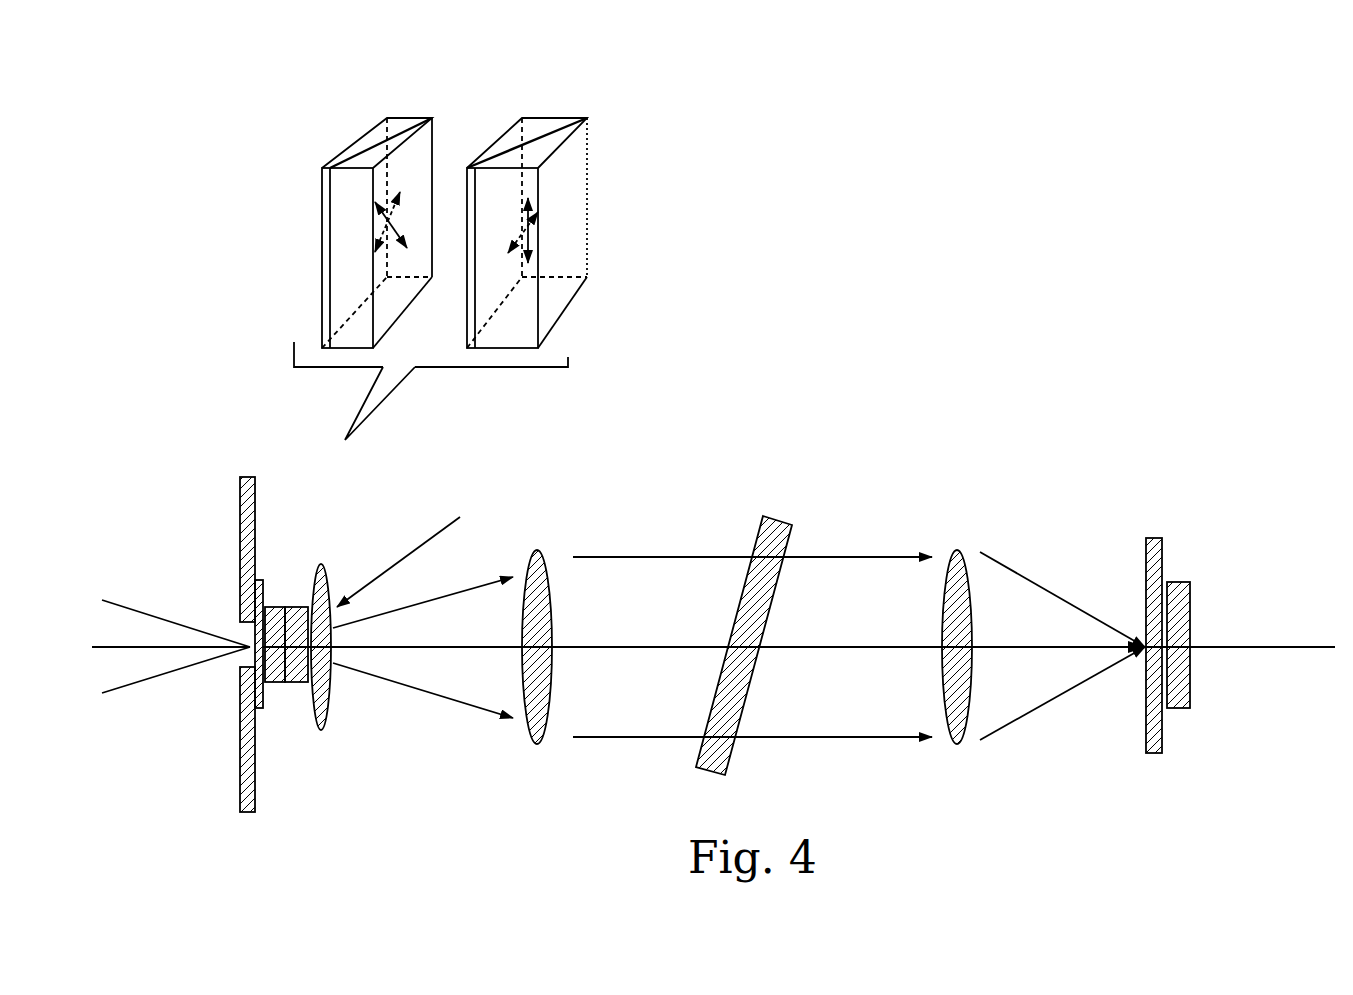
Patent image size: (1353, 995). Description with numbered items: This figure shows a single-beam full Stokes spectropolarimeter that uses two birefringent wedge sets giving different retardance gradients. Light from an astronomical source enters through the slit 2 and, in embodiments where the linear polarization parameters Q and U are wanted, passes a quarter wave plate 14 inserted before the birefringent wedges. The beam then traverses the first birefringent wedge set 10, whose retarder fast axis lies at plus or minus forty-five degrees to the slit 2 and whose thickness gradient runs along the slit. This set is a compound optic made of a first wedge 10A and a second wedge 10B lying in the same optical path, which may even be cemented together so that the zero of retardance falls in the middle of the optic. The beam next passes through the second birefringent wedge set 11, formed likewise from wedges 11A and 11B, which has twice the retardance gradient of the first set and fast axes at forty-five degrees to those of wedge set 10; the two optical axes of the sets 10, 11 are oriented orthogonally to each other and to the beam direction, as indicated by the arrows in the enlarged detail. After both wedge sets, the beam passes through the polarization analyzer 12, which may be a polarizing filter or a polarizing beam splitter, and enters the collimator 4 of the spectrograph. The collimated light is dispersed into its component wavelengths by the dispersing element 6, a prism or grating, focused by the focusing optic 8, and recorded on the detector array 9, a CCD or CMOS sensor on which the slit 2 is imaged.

The slit 2 is at (248, 477).
The collimator 4 is at (540, 548).
The dispersing element 6 is at (790, 542).
The focusing optic 8 is at (960, 550).
The detector array 9 is at (1162, 548).
The first birefringent wedge set 10 is at (273, 607).
The first wedge 10A is at (382, 120).
The second wedge 10B is at (434, 124).
The second birefringent wedge set 11 is at (296, 607).
The first wedge 11A is at (522, 120).
The second wedge 11B is at (570, 140).
The polarization analyzer 12 is at (440, 528).
The quarter wave plate 14 is at (258, 712).